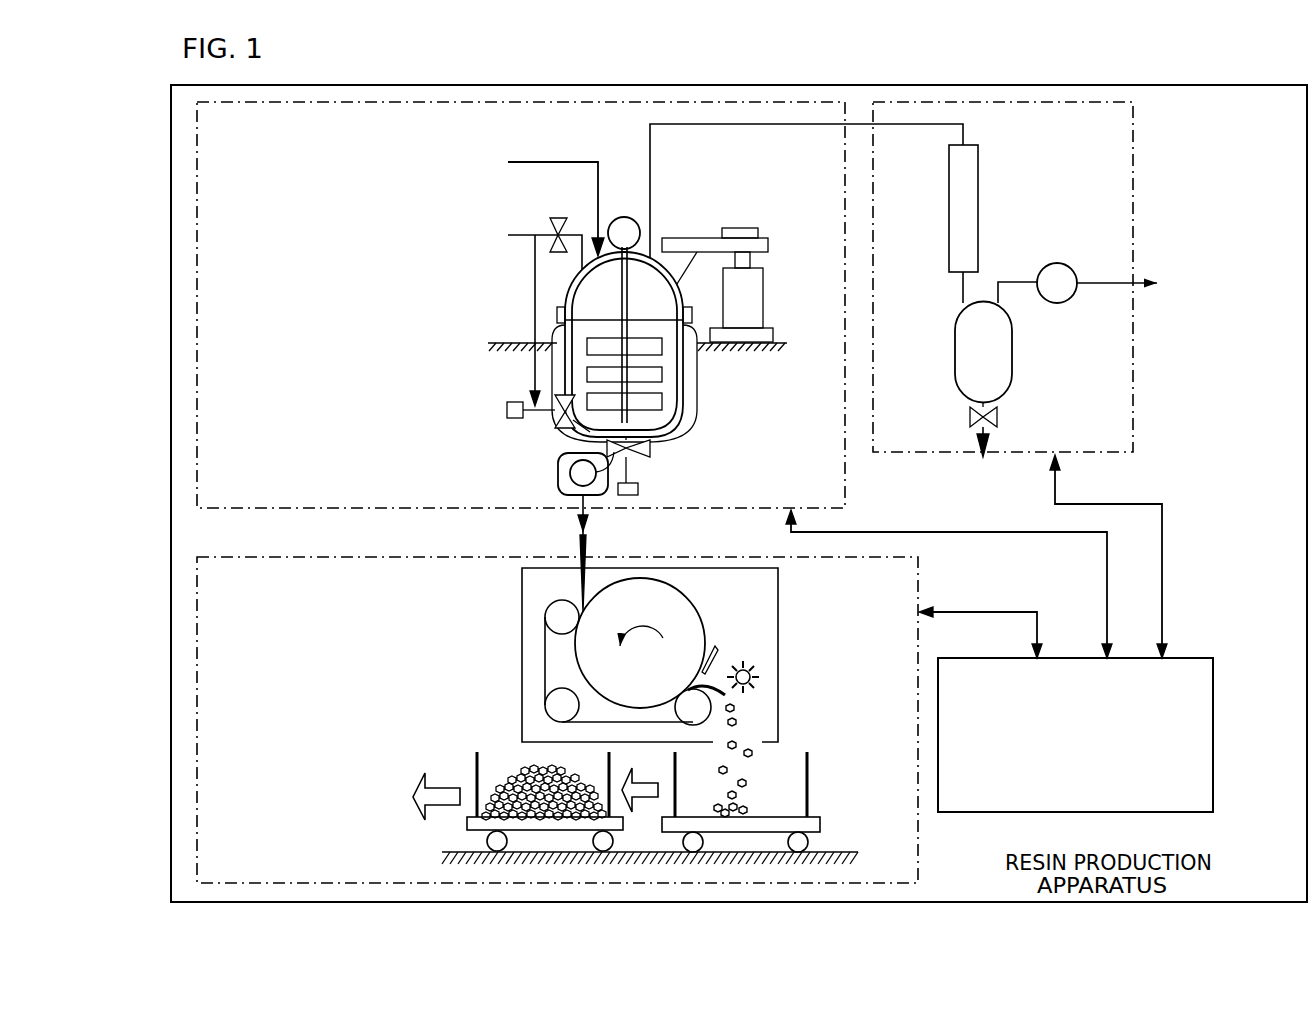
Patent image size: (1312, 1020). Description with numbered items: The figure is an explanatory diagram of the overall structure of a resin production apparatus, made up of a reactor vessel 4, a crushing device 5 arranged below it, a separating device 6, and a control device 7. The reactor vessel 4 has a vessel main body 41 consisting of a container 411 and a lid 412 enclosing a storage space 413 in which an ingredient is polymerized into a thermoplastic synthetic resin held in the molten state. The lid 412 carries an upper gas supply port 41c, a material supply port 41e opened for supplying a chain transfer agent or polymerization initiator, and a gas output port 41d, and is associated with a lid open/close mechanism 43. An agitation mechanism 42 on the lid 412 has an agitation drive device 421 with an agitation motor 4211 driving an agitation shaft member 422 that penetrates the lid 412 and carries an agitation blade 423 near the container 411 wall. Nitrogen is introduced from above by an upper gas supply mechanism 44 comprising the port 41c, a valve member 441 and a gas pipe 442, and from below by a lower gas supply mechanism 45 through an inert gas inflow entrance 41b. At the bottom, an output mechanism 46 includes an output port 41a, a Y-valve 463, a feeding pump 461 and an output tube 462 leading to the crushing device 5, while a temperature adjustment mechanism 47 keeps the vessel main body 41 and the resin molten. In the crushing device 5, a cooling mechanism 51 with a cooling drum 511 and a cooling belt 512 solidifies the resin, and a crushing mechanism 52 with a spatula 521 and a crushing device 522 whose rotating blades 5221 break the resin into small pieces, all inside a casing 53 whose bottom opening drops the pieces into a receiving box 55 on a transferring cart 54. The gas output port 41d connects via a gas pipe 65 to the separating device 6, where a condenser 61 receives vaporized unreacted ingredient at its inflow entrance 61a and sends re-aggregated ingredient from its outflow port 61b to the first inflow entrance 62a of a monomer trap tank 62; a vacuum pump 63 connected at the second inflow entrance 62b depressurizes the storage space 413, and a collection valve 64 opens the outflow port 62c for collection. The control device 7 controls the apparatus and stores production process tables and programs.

The reactor vessel 4 is at (197, 173).
The crushing device 5 is at (197, 605).
The separating device 6 is at (1133, 190).
The control device 7 is at (1195, 658).
The vessel main body 41 is at (690, 384).
The output port 41a is at (655, 441).
The inert gas inflow entrance 41b is at (578, 424).
The upper gas supply port 41c is at (565, 272).
The gas output port 41d is at (651, 254).
The material supply port 41e is at (597, 238).
The container 411 is at (673, 361).
The lid 412 is at (612, 314).
The storage space 413 is at (671, 306).
The agitation mechanism 42 is at (442, 325).
The agitation drive device 421 is at (619, 214).
The agitation motor 4211 is at (628, 217).
The agitation shaft member 422 is at (595, 340).
The agitation blade 423 is at (597, 352).
The lid open/close mechanism 43 is at (745, 230).
The upper gas supply mechanism 44 is at (538, 221).
The valve member 441 is at (556, 217).
The gas pipe 442 is at (512, 237).
The lower gas supply mechanism 45 is at (498, 415).
The output mechanism 46 is at (643, 500).
The feeding pump 461 is at (559, 478).
The output tube 462 is at (640, 488).
The Y-valve 463 is at (651, 452).
The temperature adjustment mechanism 47 is at (700, 417).
The cooling mechanism 51 is at (703, 603).
The cooling drum 511 is at (692, 620).
The cooling belt 512 is at (545, 665).
The crushing mechanism 52 is at (847, 632).
The spatula 521 is at (719, 648).
The crushing device 522 is at (759, 677).
The rotating blades 5221 is at (748, 695).
The casing 53 is at (778, 610).
The transferring cart 54 is at (467, 825).
The receiving box 55 is at (476, 757).
The condenser 61 is at (949, 197).
The inflow entrance 61a is at (966, 142).
The outflow port 61b is at (962, 270).
The monomer trap tank 62 is at (1012, 350).
The first inflow entrance 62a is at (959, 308).
The second inflow entrance 62b is at (1003, 306).
The outflow port 62c is at (978, 400).
The vacuum pump 63 is at (1059, 263).
The collection valve 64 is at (998, 417).
The gas pipe 65 is at (808, 125).